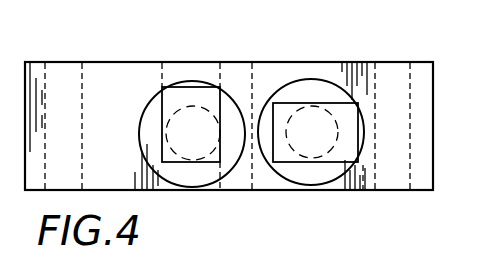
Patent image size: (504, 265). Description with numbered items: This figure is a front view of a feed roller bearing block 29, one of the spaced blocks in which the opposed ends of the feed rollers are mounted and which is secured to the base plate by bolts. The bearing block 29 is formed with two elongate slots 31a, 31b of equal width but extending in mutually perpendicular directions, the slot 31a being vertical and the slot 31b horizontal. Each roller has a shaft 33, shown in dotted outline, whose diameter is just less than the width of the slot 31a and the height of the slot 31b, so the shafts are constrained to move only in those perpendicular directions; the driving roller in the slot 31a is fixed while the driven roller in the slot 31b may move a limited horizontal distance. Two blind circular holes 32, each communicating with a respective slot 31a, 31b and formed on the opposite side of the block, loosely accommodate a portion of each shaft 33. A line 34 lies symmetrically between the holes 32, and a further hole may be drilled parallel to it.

The roller bearing block 29 is at (100, 65).
The elongate slot 31a is at (210, 103).
The elongate slot 31b is at (325, 103).
The blind circular hole 32 is at (284, 174).
The shaft 33 is at (214, 160).
The line 34 is at (250, 80).